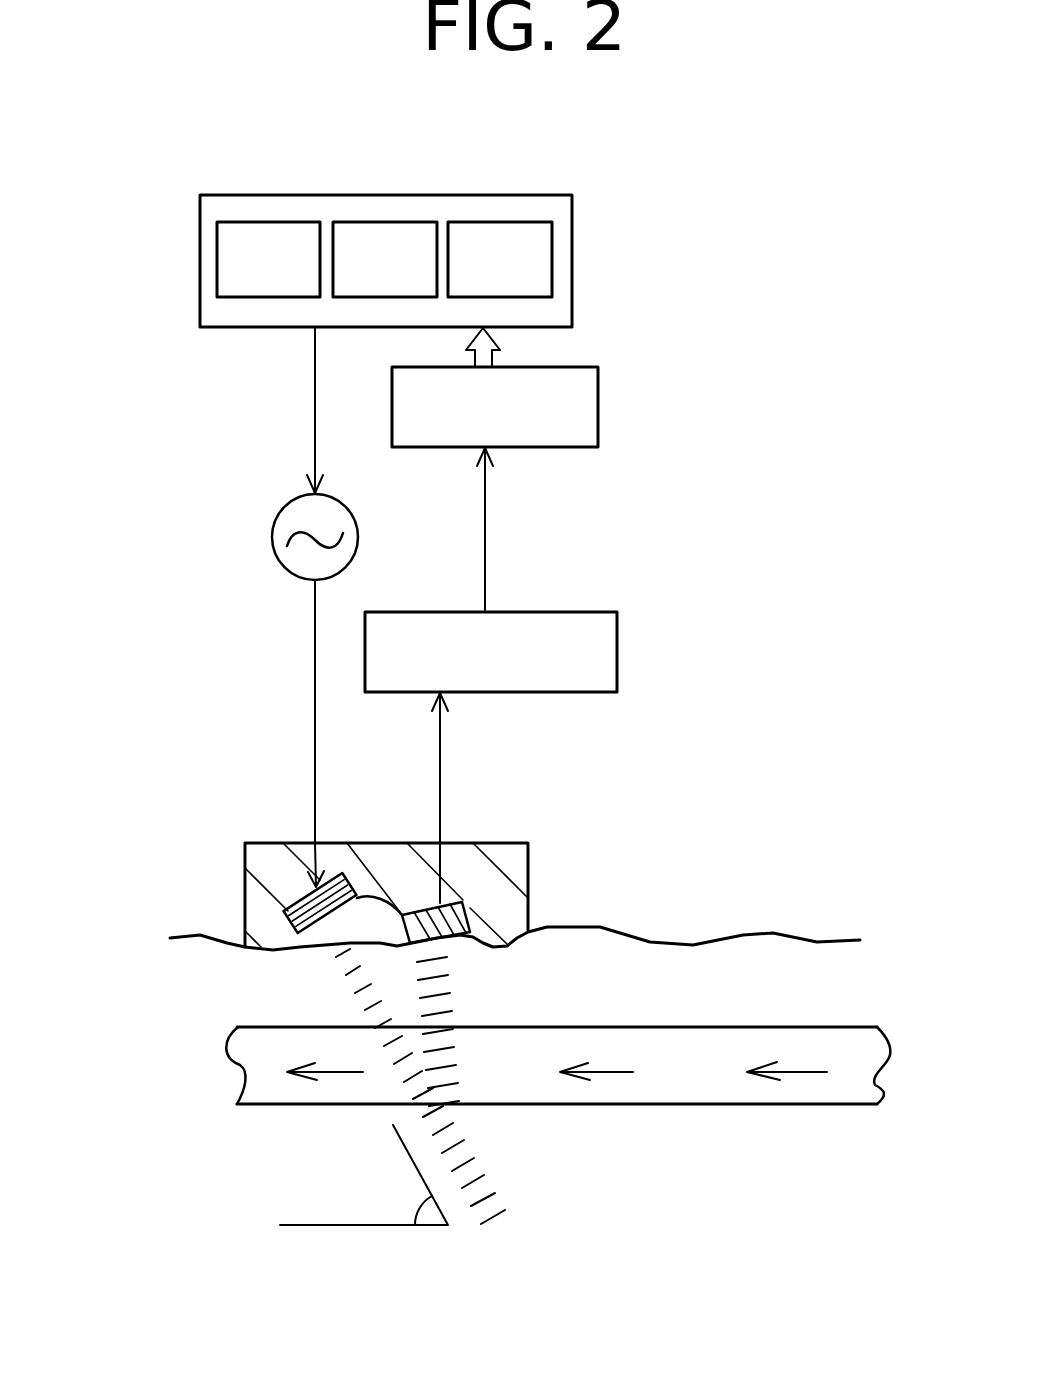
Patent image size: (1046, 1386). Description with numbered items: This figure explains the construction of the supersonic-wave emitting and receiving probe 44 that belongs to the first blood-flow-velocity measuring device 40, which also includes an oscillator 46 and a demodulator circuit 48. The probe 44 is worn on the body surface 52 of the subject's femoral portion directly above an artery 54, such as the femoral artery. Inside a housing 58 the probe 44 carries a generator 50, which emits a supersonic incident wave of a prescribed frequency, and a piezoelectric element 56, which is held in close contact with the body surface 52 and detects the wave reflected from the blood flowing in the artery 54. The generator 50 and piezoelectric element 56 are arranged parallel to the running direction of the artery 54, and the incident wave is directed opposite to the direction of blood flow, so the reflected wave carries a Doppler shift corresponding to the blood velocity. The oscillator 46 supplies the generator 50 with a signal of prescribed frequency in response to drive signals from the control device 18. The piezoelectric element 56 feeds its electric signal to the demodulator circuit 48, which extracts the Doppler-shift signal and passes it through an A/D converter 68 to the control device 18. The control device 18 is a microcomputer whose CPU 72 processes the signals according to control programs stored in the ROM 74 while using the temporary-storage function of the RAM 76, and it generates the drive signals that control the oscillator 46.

The control device 18 is at (359, 258).
The first blood-flow-velocity measuring device 40 is at (205, 562).
The supersonic-wave emitting and receiving probe 44 is at (538, 798).
The oscillator 46 is at (290, 518).
The demodulator circuit 48 is at (583, 612).
The generator 50 is at (350, 888).
The body surface 52 is at (562, 923).
The artery 54 is at (637, 1092).
The piezoelectric element 56 is at (458, 912).
The housing 58 is at (263, 842).
The A/D converter 68 is at (586, 420).
The CPU 72 is at (290, 232).
The ROM 74 is at (410, 232).
The RAM 76 is at (530, 232).